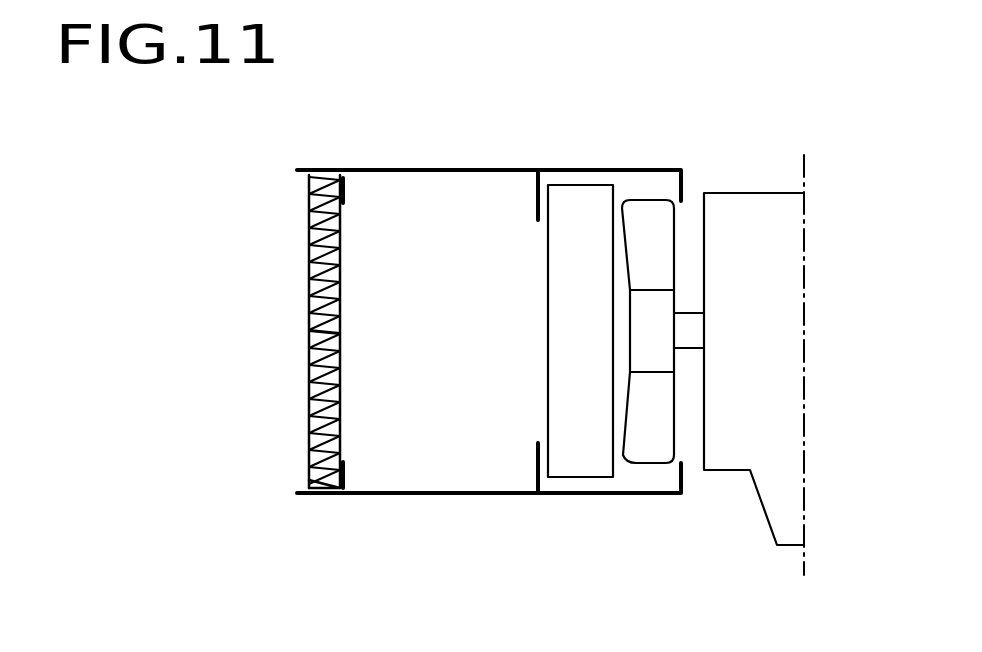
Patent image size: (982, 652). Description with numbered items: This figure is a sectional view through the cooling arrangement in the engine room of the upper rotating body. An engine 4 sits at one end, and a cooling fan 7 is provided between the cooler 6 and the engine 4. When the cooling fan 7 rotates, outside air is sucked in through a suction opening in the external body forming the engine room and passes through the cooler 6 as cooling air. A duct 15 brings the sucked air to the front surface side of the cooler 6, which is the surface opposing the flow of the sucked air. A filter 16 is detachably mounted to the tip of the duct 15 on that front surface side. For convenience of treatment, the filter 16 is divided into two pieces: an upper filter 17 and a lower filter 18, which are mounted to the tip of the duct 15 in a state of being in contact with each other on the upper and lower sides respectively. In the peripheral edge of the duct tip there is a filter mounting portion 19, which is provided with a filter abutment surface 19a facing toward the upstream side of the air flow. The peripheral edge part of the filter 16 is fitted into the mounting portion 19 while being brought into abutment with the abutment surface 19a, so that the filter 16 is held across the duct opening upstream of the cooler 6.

The engine 4 is at (748, 193).
The cooler 6 is at (578, 184).
The cooling fan 7 is at (645, 200).
The duct 15 is at (444, 170).
The filter 16 is at (256, 330).
The upper filter 17 is at (309, 278).
The lower filter 18 is at (286, 407).
The filter mounting portion 19 is at (320, 496).
The filter abutment surface 19a is at (335, 172).